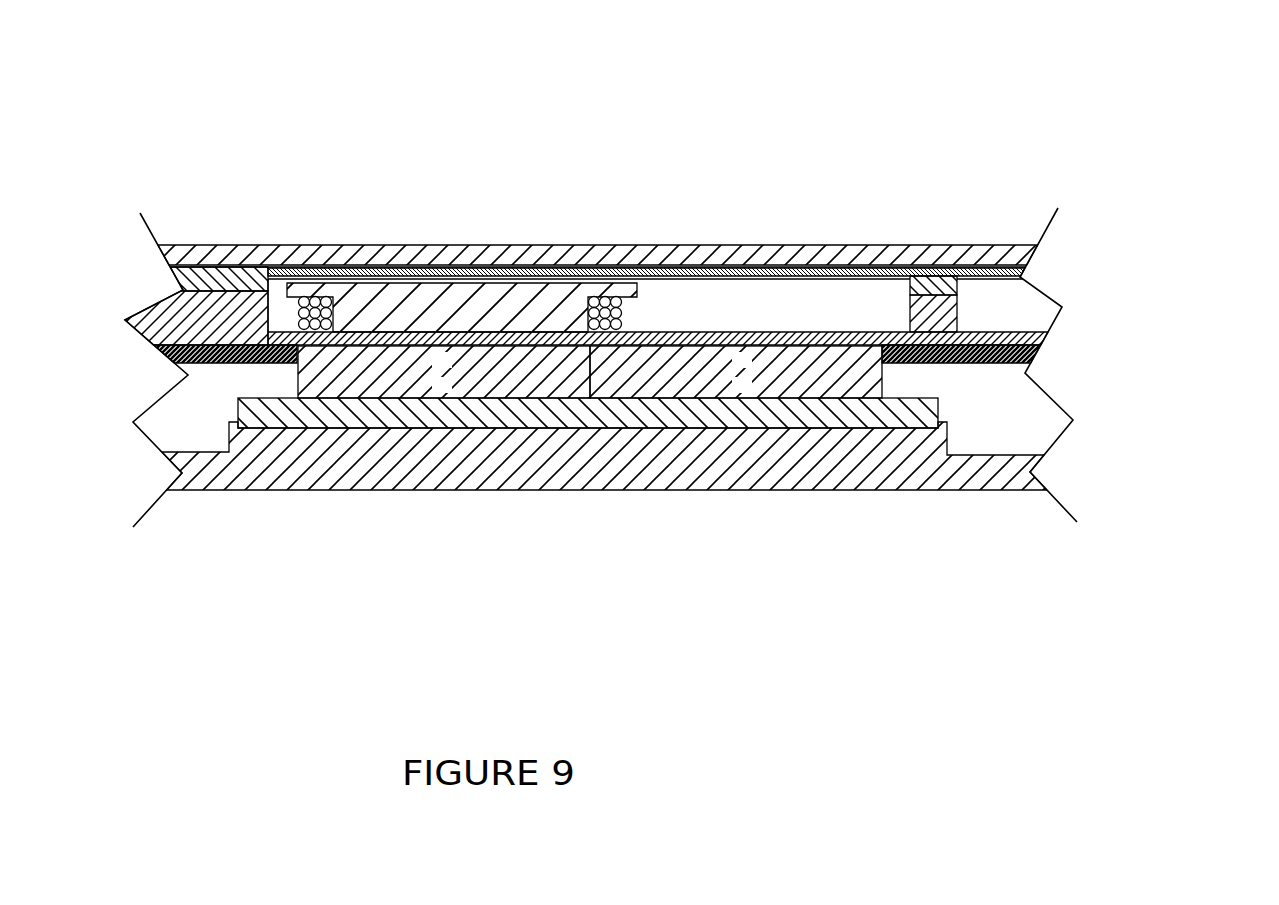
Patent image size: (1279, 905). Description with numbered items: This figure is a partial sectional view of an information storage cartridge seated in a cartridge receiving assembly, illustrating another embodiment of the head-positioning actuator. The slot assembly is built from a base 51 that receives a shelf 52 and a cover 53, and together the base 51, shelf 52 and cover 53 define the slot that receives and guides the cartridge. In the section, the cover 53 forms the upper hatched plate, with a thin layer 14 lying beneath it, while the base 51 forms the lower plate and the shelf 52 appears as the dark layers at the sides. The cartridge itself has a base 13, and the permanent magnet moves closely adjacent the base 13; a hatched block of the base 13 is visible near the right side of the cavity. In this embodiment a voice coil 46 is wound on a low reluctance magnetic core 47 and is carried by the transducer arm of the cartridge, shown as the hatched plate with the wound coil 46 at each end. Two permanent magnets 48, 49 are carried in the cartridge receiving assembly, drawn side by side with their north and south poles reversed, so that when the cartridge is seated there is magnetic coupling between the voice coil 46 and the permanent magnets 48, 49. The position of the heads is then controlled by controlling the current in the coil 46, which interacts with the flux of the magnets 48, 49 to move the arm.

The base 13 is at (933, 310).
The lower layer of top cover 14 is at (213, 281).
The voice coil 46 is at (607, 300).
The low reluctance magnetic core 47 is at (360, 296).
The permanent magnet 48 is at (370, 376).
The permanent magnet 49 is at (660, 382).
The base 51 is at (870, 462).
The shelf 52 is at (1037, 355).
The cover 53 is at (465, 252).